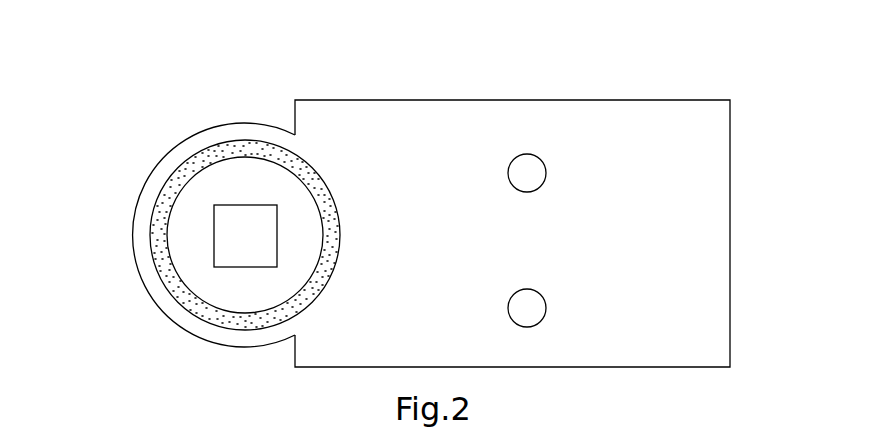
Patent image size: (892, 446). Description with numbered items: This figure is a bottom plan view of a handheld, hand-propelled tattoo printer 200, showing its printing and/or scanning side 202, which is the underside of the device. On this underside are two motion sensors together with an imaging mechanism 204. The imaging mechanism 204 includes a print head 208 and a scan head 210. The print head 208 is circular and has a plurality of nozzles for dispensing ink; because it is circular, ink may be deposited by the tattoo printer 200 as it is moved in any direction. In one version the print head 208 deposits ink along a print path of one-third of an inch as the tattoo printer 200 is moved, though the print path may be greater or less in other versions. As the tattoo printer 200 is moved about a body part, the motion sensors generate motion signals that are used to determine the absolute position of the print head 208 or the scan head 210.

The tattoo printer 200 is at (641, 85).
The printing and/or scanning side 202 is at (508, 100).
The imaging mechanism 204 is at (238, 123).
The print head 208 is at (196, 152).
The scan head 210 is at (214, 252).